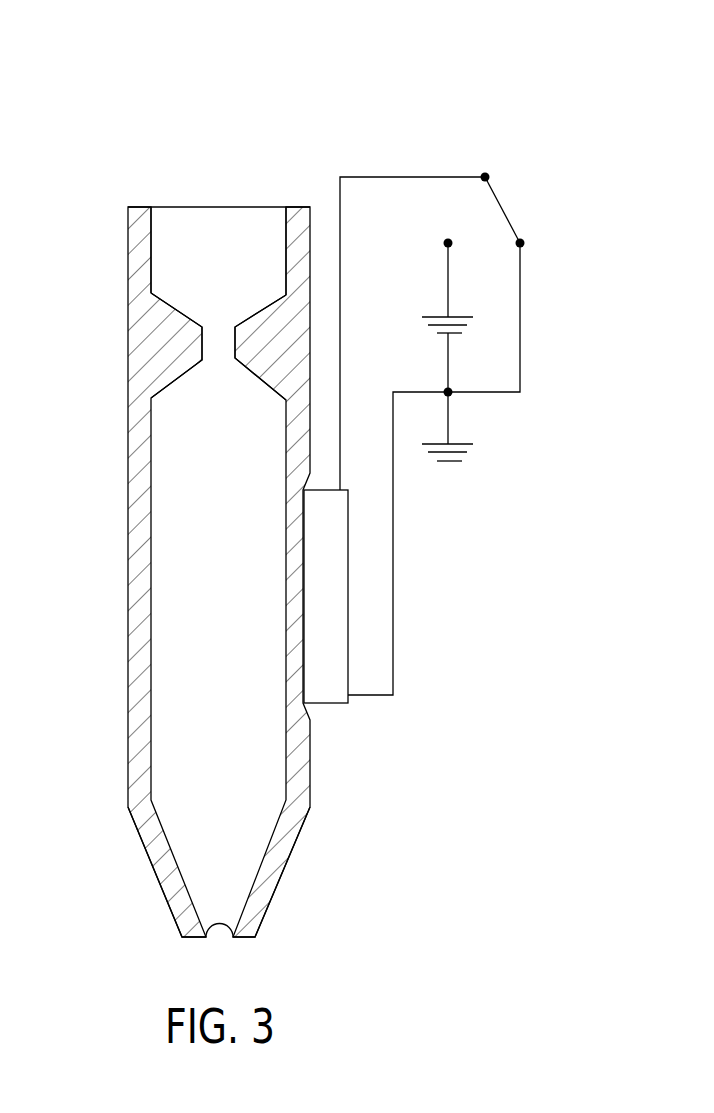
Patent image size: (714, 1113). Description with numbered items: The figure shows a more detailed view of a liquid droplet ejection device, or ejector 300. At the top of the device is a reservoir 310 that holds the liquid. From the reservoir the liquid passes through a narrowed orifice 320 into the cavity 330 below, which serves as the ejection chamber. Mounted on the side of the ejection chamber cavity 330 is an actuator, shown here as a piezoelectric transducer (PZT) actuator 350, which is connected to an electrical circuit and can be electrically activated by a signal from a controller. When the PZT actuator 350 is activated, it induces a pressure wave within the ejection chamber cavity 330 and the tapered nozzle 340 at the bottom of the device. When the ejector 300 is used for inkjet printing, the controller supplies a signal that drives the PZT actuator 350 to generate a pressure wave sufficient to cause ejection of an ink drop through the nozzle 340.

The ejector 300 is at (463, 95).
The reservoir 310 is at (200, 257).
The orifice 320 is at (200, 342).
The cavity 330 is at (200, 591).
The nozzle 340 is at (216, 905).
The piezoelectric transducer (PZT) actuator 350 is at (327, 712).